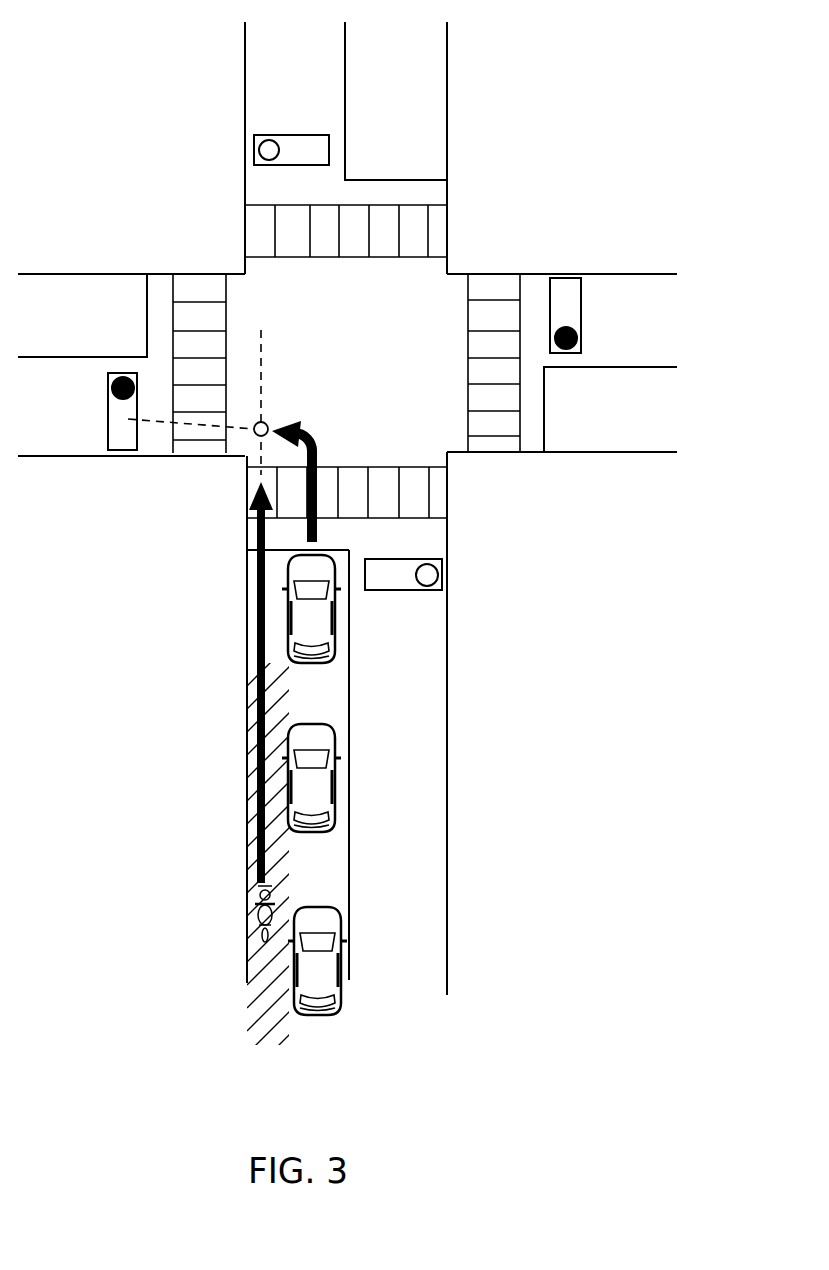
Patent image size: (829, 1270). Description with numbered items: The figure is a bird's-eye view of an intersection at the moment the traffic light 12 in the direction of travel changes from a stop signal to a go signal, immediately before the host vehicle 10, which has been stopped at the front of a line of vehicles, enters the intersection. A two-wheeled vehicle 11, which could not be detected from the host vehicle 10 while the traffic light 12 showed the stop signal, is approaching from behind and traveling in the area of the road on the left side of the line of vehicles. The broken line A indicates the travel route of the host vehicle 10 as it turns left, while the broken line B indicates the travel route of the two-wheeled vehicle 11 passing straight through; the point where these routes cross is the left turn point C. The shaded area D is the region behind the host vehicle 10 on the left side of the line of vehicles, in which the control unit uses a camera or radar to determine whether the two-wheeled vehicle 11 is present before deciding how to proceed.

The host vehicle 10 is at (307, 647).
The two-wheeled vehicle 11 is at (265, 933).
The traffic light 12 is at (255, 145).
The broken line A (travel route of the host vehicle) A is at (168, 425).
The broken line B (travel route of the two-wheeled vehicle) B is at (257, 378).
The left turn point C is at (257, 434).
The shaded area D is at (265, 995).